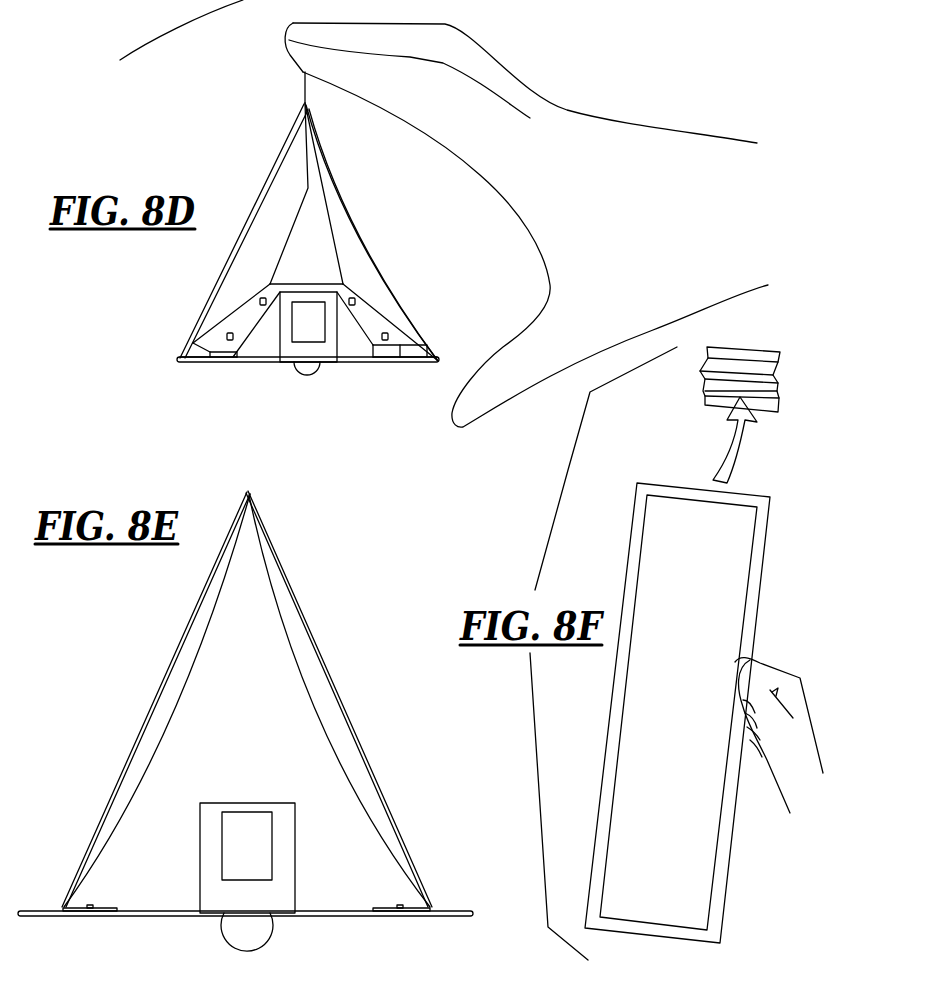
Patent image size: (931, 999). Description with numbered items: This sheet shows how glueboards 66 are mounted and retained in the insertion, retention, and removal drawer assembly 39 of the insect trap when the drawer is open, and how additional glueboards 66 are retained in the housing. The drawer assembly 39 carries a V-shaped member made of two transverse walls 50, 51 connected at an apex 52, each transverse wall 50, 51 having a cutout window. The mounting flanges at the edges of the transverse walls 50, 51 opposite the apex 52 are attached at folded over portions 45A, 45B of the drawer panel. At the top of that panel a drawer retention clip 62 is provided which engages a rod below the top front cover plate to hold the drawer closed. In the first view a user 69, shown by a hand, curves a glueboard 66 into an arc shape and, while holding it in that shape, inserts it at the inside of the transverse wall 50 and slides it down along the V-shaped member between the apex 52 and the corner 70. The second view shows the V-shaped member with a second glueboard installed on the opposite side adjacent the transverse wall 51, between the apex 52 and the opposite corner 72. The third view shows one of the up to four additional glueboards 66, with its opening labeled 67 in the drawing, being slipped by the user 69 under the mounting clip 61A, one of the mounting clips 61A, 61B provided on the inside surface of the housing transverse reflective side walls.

In FIG. 8D, the drawer assembly 39 is at (185, 308).
In FIG. 8D, the folded over portion 45A is at (193, 344).
In FIG. 8D, the folded over portion 45B is at (370, 350).
In FIG. 8D, the transverse wall 50 is at (372, 257).
In FIG. 8E, the transverse wall 51 is at (173, 660).
In FIG. 8D, the apex 52 is at (298, 125).
In FIG. 8E, the apex 52 is at (250, 492).
In FIG. 8D, the mounting clip 61A is at (197, 343).
In FIG. 8F, the mounting clip 61A is at (705, 378).
In FIG. 8D, the mounting clip 61B is at (370, 380).
In FIG. 8D, the drawer retention clip 62 is at (287, 348).
In FIG. 8E, the drawer retention clip 62 is at (247, 877).
In FIG. 8D, the glueboard 66 is at (343, 200).
In FIG. 8E, the glueboard 66 is at (152, 761).
In FIG. 8F, the glueboard 66 is at (742, 568).
In FIG. 8F, the frame opening 67 is at (650, 743).
In FIG. 8D, the user 69 is at (638, 162).
In FIG. 8F, the user 69 is at (800, 728).
In FIG. 8D, the corner 70 is at (413, 357).
In FIG. 8E, the corner 70 is at (427, 907).
In FIG. 8D, the corner 72 is at (213, 349).
In FIG. 8E, the corner 72 is at (90, 905).